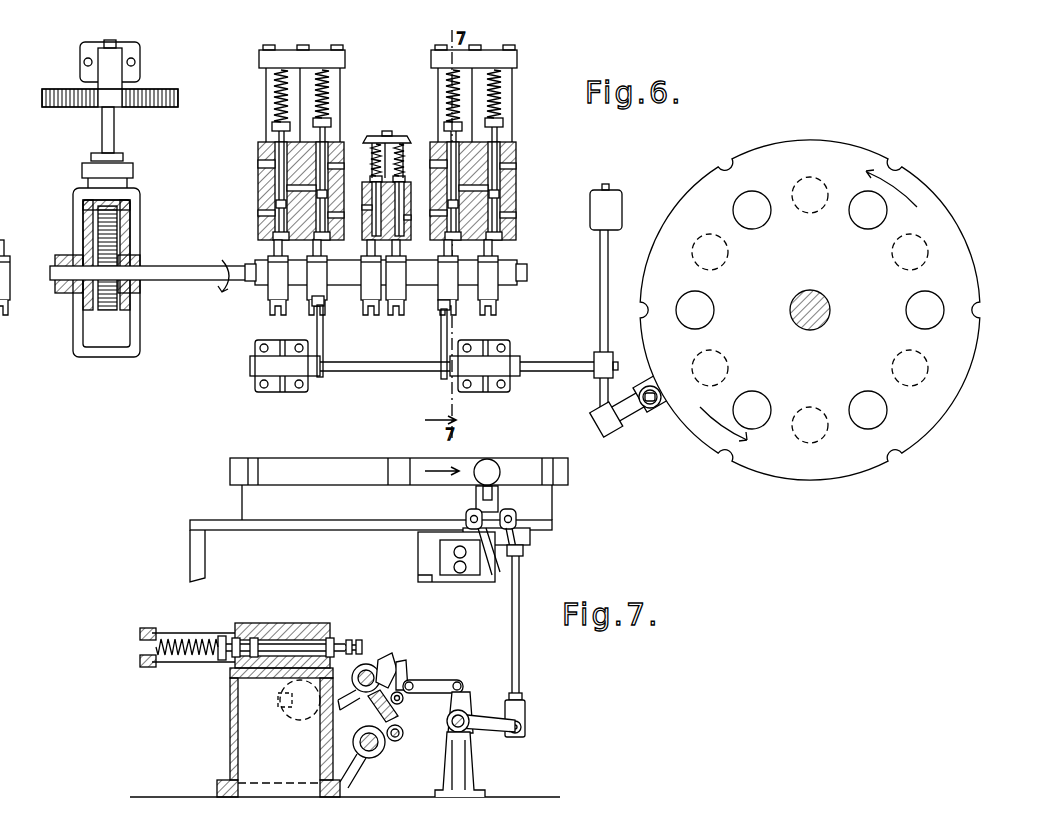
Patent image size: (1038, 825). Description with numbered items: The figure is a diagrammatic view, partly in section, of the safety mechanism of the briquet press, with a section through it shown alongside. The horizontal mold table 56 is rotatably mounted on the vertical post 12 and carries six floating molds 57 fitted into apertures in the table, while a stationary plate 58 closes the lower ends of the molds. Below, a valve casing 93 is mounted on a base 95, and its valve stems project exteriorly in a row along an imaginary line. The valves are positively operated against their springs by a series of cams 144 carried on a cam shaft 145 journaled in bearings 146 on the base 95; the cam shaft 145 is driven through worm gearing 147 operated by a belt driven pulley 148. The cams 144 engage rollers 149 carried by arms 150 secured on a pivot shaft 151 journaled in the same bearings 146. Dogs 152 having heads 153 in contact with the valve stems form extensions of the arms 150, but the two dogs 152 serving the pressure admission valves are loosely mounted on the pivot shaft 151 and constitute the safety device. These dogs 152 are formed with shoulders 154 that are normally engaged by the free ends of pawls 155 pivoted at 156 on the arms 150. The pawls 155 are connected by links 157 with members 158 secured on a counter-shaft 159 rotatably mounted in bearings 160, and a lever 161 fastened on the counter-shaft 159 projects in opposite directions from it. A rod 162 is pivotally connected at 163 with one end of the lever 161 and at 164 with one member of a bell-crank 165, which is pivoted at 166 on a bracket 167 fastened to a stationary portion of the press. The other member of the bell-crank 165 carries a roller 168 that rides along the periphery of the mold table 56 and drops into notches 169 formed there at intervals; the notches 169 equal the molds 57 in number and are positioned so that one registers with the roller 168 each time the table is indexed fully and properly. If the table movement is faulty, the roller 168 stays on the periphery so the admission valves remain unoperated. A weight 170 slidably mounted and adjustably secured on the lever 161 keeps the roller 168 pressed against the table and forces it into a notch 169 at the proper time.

In FIG. 6, the vertical post 12 is at (822, 311).
In FIG. 6, the mold table 56 is at (944, 412).
In FIG. 7, the mold table 56 is at (569, 474).
In FIG. 6, the molds 57 is at (861, 220).
In FIG. 7, the stationary plate 58 is at (553, 527).
In FIG. 6, the valve casing 93 is at (517, 191).
In FIG. 7, the valve casing 93 is at (300, 624).
In FIG. 7, the base 95 is at (230, 722).
In FIG. 7, the cams 144 is at (383, 752).
In FIG. 6, the cam shaft 145 is at (165, 279).
In FIG. 7, the cam shaft 145 is at (369, 752).
In FIG. 7, the bearings 146 is at (357, 775).
In FIG. 6, the worm gearing 147 is at (113, 240).
In FIG. 6, the belt driven pulley 148 is at (143, 106).
In FIG. 7, the rollers 149 is at (401, 738).
In FIG. 6, the arms 150 is at (323, 290).
In FIG. 7, the arms 150 is at (395, 712).
In FIG. 7, the pivot shaft 151 is at (348, 703).
In FIG. 6, the dogs 152 is at (317, 272).
In FIG. 7, the dogs 152 is at (377, 664).
In FIG. 6, the heads 153 is at (440, 283).
In FIG. 7, the heads 153 is at (365, 662).
In FIG. 7, the shoulders 154 is at (388, 660).
In FIG. 6, the pawls 155 is at (313, 308).
In FIG. 7, the pawls 155 is at (405, 674).
In FIG. 7, the pivot 156 is at (404, 698).
In FIG. 6, the links 157 is at (323, 338).
In FIG. 7, the links 157 is at (433, 684).
In FIG. 7, the members 158 is at (466, 705).
In FIG. 6, the counter-shaft 159 is at (533, 366).
In FIG. 7, the counter-shaft 159 is at (465, 729).
In FIG. 7, the bearings 160 is at (476, 777).
In FIG. 6, the lever 161 is at (600, 306).
In FIG. 7, the lever 161 is at (486, 722).
In FIG. 7, the rod 162 is at (512, 637).
In FIG. 7, the pivot 163 is at (522, 728).
In FIG. 7, the pivot 164 is at (506, 560).
In FIG. 6, the bell-crank 165 is at (626, 416).
In FIG. 7, the bell-crank 165 is at (499, 502).
In FIG. 7, the pivot 166 is at (468, 518).
In FIG. 7, the bracket 167 is at (468, 529).
In FIG. 6, the roller 168 is at (659, 410).
In FIG. 7, the roller 168 is at (490, 462).
In FIG. 6, the notches 169 is at (727, 166).
In FIG. 7, the notches 169 is at (256, 460).
In FIG. 6, the weight 170 is at (606, 207).
In FIG. 7, the weight 170 is at (294, 715).